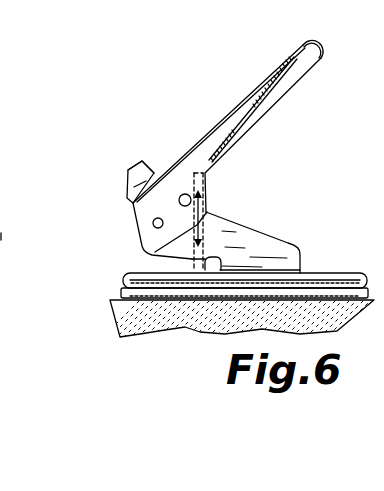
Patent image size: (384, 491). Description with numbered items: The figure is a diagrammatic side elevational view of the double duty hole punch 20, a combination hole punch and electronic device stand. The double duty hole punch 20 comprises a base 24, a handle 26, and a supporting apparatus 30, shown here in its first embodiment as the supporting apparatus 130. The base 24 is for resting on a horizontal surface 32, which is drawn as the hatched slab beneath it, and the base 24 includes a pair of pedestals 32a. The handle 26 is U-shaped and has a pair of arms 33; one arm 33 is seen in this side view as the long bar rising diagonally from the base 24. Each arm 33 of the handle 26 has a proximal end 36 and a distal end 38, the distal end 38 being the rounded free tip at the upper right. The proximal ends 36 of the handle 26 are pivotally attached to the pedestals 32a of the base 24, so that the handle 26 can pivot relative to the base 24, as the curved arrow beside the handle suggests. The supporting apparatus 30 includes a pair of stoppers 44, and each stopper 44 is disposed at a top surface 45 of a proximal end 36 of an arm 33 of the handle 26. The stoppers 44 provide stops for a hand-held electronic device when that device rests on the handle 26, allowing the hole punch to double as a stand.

The double duty hole punch 20 is at (176, 85).
The base 24 is at (207, 308).
The handle 26 is at (253, 80).
The supporting apparatus 30 is at (91, 184).
The supporting apparatus 130 is at (127, 167).
The horizontal surface 32 is at (155, 330).
The pedestals 32a is at (296, 110).
The arms 33 is at (239, 127).
The proximal ends 36 is at (182, 192).
The distal ends 38 is at (289, 66).
The stoppers 44 is at (140, 156).
The top surfaces 45 is at (130, 203).